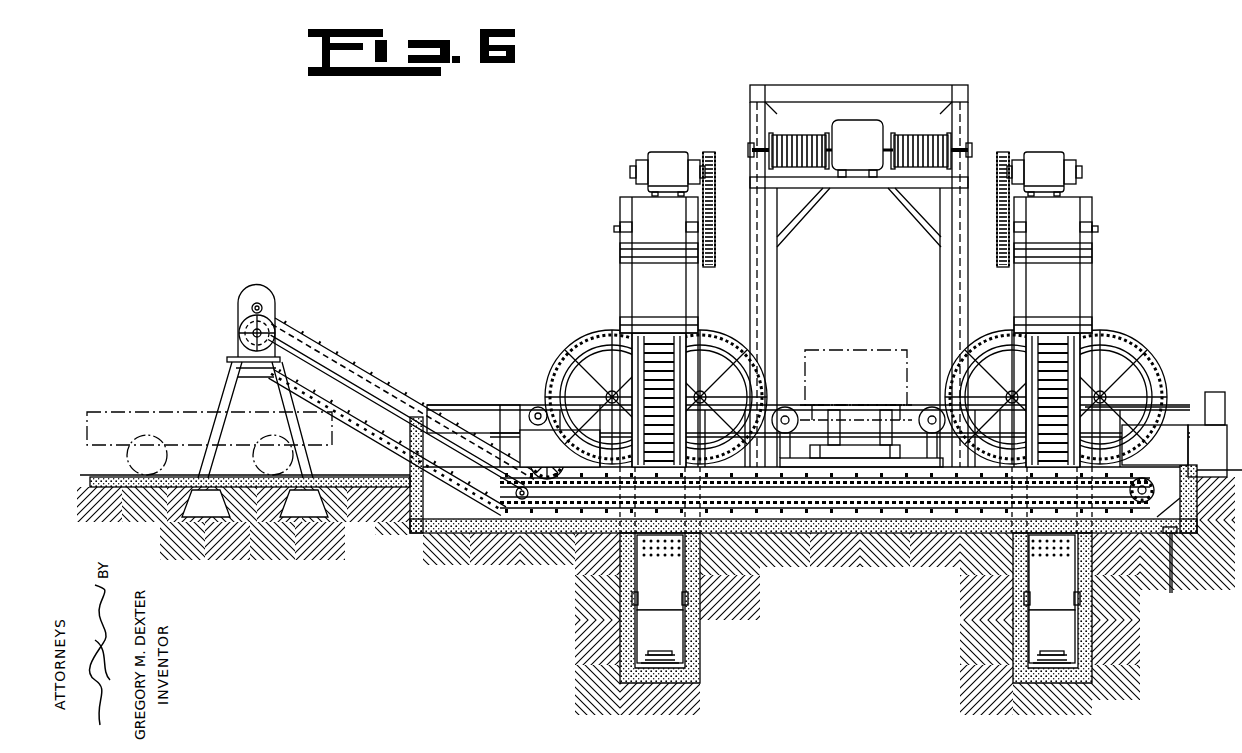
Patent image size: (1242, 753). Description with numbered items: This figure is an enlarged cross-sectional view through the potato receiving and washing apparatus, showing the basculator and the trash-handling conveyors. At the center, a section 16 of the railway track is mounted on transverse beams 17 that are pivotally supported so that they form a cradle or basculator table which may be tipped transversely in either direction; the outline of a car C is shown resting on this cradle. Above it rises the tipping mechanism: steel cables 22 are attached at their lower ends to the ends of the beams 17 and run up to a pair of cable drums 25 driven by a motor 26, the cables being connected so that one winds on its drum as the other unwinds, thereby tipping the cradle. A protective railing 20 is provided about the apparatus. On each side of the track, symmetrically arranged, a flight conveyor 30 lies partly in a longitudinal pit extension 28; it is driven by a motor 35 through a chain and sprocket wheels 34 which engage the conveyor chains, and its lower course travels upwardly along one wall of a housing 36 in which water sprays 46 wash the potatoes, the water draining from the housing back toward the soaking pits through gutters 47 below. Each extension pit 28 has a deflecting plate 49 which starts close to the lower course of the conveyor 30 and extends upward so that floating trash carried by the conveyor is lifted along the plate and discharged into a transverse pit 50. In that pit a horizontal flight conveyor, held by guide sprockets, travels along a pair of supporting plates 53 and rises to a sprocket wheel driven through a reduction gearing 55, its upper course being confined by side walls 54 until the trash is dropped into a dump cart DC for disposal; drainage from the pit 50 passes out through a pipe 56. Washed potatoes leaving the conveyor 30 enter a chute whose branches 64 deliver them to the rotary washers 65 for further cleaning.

The track section 16 is at (842, 448).
The transverse beams 17 is at (858, 432).
The protective railing 20 is at (500, 405).
The steel cables 22 is at (779, 270).
The cable drums 25 is at (821, 135).
The motor 26 is at (866, 148).
The longitudinal pit extensions 28 is at (690, 625).
The flight conveyor 30 is at (658, 654).
The sprocket wheels 34 is at (1001, 262).
The motor 35 is at (672, 152).
The housing 36 is at (622, 287).
The water sprays 46 is at (865, 385).
The elevator chain 47 is at (645, 335).
The deflecting plate 49 is at (666, 583).
The transverse pit 50 is at (431, 516).
The supporting plates 53 is at (830, 513).
The side walls 54 is at (392, 419).
The reduction gearing 55 is at (277, 301).
The drainage pipe 56 is at (1172, 591).
The chute branches 64 is at (1185, 375).
The rotary washers 65 is at (550, 349).
The car C is at (857, 350).
The dump cart DC is at (112, 414).